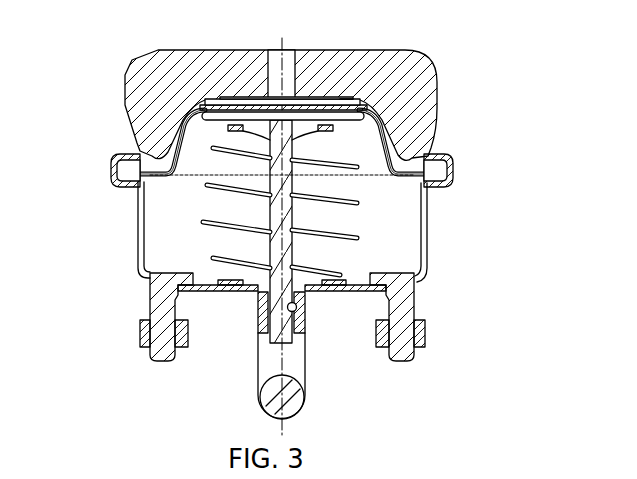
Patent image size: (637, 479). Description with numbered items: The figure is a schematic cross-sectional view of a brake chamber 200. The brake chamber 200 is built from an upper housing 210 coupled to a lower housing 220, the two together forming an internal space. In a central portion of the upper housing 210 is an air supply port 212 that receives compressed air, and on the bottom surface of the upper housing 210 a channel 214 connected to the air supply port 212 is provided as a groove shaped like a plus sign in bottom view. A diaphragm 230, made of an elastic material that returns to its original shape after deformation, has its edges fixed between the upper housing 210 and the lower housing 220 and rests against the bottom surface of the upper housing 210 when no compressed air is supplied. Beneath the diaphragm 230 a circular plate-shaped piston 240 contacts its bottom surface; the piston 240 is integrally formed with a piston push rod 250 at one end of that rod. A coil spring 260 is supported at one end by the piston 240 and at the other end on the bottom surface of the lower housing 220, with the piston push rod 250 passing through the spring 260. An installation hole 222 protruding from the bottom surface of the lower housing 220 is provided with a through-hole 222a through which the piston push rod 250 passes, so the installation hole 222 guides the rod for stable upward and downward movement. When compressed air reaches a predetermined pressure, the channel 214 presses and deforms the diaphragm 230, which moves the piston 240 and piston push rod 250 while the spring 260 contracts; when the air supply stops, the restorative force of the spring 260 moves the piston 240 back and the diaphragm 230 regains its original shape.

The brake chamber 200 is at (76, 47).
The upper housing 210 is at (430, 80).
The air supply port 212 is at (290, 67).
The channel 214 is at (347, 97).
The lower housing 220 is at (428, 240).
The installation hole 222 is at (302, 320).
The through-hole 222a is at (297, 306).
The diaphragm 230 is at (180, 143).
The piston 240 is at (372, 104).
The piston push rod 250 is at (298, 212).
The spring 260 is at (342, 160).